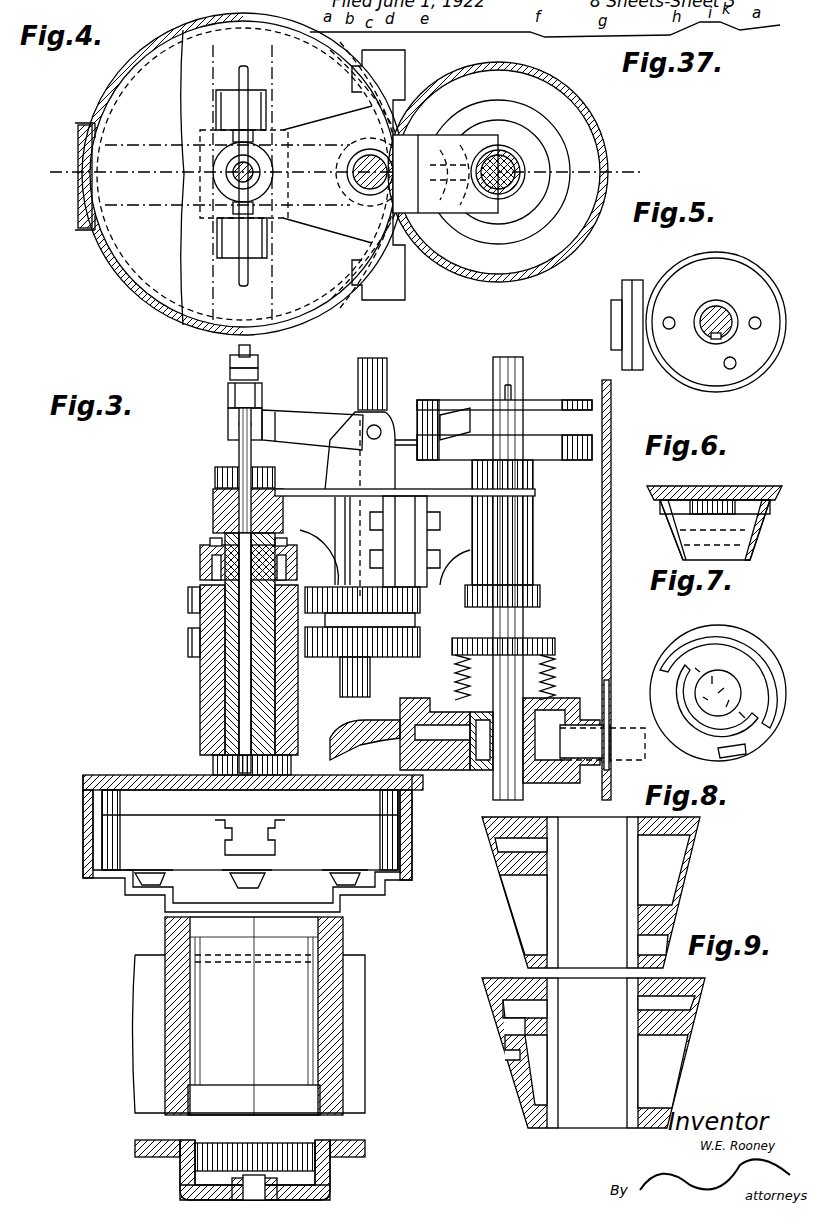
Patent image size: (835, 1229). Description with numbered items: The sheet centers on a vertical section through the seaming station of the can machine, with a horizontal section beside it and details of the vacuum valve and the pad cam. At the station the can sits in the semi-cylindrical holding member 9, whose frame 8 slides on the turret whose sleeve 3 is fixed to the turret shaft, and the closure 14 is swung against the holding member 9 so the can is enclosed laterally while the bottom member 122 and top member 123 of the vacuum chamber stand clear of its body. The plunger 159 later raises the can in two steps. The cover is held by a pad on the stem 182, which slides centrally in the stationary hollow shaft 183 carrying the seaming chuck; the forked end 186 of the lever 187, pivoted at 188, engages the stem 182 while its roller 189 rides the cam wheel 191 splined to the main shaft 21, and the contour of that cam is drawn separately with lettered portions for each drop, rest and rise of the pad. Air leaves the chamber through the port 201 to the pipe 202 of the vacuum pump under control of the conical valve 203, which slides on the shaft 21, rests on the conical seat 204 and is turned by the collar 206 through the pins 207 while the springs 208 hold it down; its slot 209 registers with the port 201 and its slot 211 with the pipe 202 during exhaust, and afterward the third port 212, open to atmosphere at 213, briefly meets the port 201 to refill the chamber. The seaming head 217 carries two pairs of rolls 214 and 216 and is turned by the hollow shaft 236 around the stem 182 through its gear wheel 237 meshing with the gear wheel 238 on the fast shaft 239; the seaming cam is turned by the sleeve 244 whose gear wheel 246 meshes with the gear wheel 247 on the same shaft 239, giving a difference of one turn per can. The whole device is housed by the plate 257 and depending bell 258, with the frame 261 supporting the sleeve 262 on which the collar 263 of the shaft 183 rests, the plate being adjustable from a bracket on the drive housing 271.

In FIG. 4, the sleeve 3 is at (655, 152).
In FIG. 7, the frame 8 is at (760, 727).
In FIG. 7, the holding member 9 is at (732, 752).
In FIG. 3, the holding member 9 is at (165, 980).
In FIG. 3, the closure 14 is at (343, 950).
In FIG. 4, the main shaft 21 is at (510, 160).
In FIG. 5, the main shaft 21 is at (713, 310).
In FIG. 3, the main shaft 21 is at (505, 372).
In FIG. 3, the bottom member 122 is at (330, 1190).
In FIG. 3, the top member 123 is at (412, 852).
In FIG. 3, the plunger 159 is at (285, 1155).
In FIG. 4, the stem 182 is at (243, 172).
In FIG. 3, the stem 182 is at (240, 690).
In FIG. 3, the hollow shaft 183 is at (225, 558).
In FIG. 3, the forked end 186 is at (258, 416).
In FIG. 3, the lever 187 is at (326, 420).
In FIG. 3, the pivot 188 is at (378, 428).
In FIG. 3, the roller 189 is at (445, 425).
In FIG. 3, the cam wheel 191 is at (520, 400).
In FIG. 3, the port 201 is at (420, 780).
In FIG. 3, the pipe 202 is at (640, 765).
In FIG. 6, the valve 203 is at (762, 535).
In FIG. 7, the valve 203 is at (786, 693).
In FIG. 8, the valve 203 is at (690, 845).
In FIG. 9, the valve 203 is at (682, 1085).
In FIG. 3, the valve 203 is at (575, 795).
In FIG. 3, the conical seat 204 is at (470, 775).
In FIG. 3, the collar 206 is at (540, 638).
In FIG. 5, the pins 207 is at (766, 306).
In FIG. 3, the pins 207 is at (565, 652).
In FIG. 3, the springs 208 is at (455, 672).
In FIG. 6, the slot 209 is at (745, 508).
In FIG. 7, the slot 209 is at (755, 648).
In FIG. 8, the slot 209 is at (510, 860).
In FIG. 9, the slot 209 is at (680, 1023).
In FIG. 3, the slot 209 is at (485, 735).
In FIG. 6, the slot 211 is at (690, 547).
In FIG. 7, the slot 211 is at (700, 735).
In FIG. 8, the slot 211 is at (660, 925).
In FIG. 9, the slot 211 is at (516, 1090).
In FIG. 3, the slot 211 is at (548, 748).
In FIG. 5, the third port 212 is at (724, 363).
In FIG. 7, the third port 212 is at (735, 752).
In FIG. 9, the third port 212 is at (505, 1022).
In FIG. 9, the atmospheric connection 213 is at (512, 975).
In FIG. 3, the rolls 214 is at (375, 920).
In FIG. 3, the rolls 216 is at (280, 858).
In FIG. 3, the seaming head 217 is at (160, 855).
In FIG. 3, the hollow shaft 236 is at (225, 735).
In FIG. 3, the gear wheel 237 is at (188, 595).
In FIG. 4, the gear wheel 238 is at (360, 125).
In FIG. 3, the gear wheel 238 is at (420, 600).
In FIG. 3, the shaft 239 is at (372, 385).
In FIG. 3, the sleeve 244 is at (220, 760).
In FIG. 3, the gear wheel 246 is at (188, 644).
In FIG. 3, the gear wheel 247 is at (420, 640).
In FIG. 4, the plate 257 is at (278, 35).
In FIG. 3, the plate 257 is at (110, 778).
In FIG. 4, the bell 258 is at (128, 285).
In FIG. 3, the bell 258 is at (398, 830).
In FIG. 4, the frame 261 is at (255, 112).
In FIG. 3, the sleeve 262 is at (213, 510).
In FIG. 4, the collar 263 is at (262, 160).
In FIG. 3, the collar 263 is at (215, 478).
In FIG. 4, the housing 271 is at (609, 138).
In FIG. 3, the housing 271 is at (602, 520).